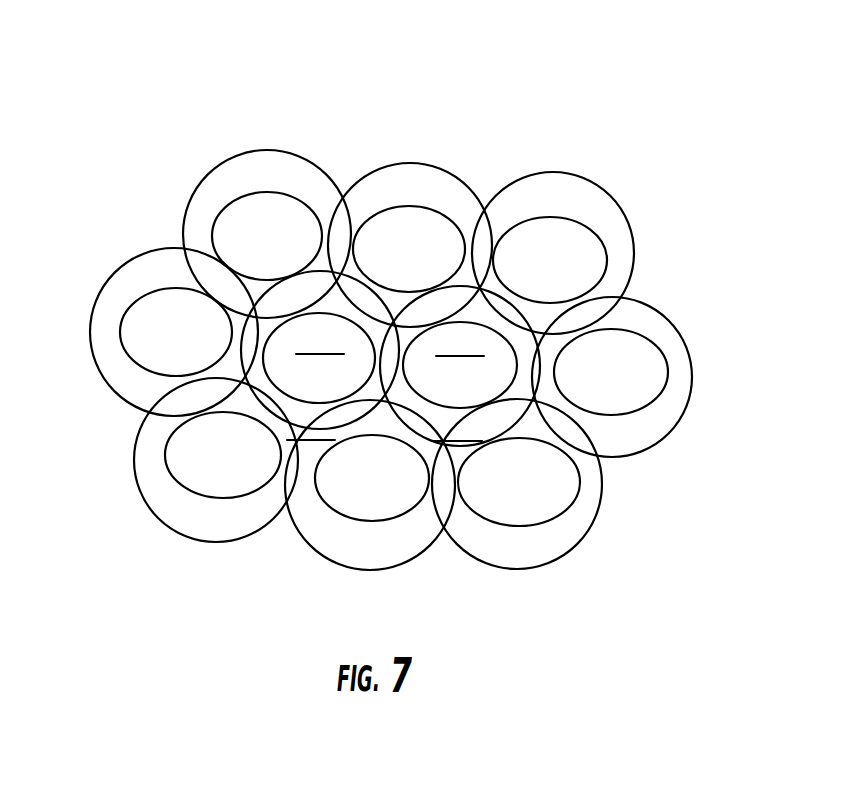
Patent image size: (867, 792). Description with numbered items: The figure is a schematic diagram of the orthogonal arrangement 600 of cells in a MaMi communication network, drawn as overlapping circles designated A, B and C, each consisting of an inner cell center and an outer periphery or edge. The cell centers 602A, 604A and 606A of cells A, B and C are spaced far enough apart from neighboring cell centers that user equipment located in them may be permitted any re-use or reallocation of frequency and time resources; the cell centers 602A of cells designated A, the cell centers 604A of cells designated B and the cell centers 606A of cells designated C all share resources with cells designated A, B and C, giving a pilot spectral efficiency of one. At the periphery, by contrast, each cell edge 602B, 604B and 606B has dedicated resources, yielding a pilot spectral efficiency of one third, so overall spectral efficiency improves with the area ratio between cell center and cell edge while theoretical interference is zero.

The orthogonal arrangement 600 is at (674, 114).
The cell center 602A is at (389, 218).
The cell periphery 602B is at (143, 272).
The cell center 604A is at (228, 218).
The cell periphery 604B is at (264, 160).
The cell center 606A is at (540, 225).
The cell periphery 606B is at (605, 207).